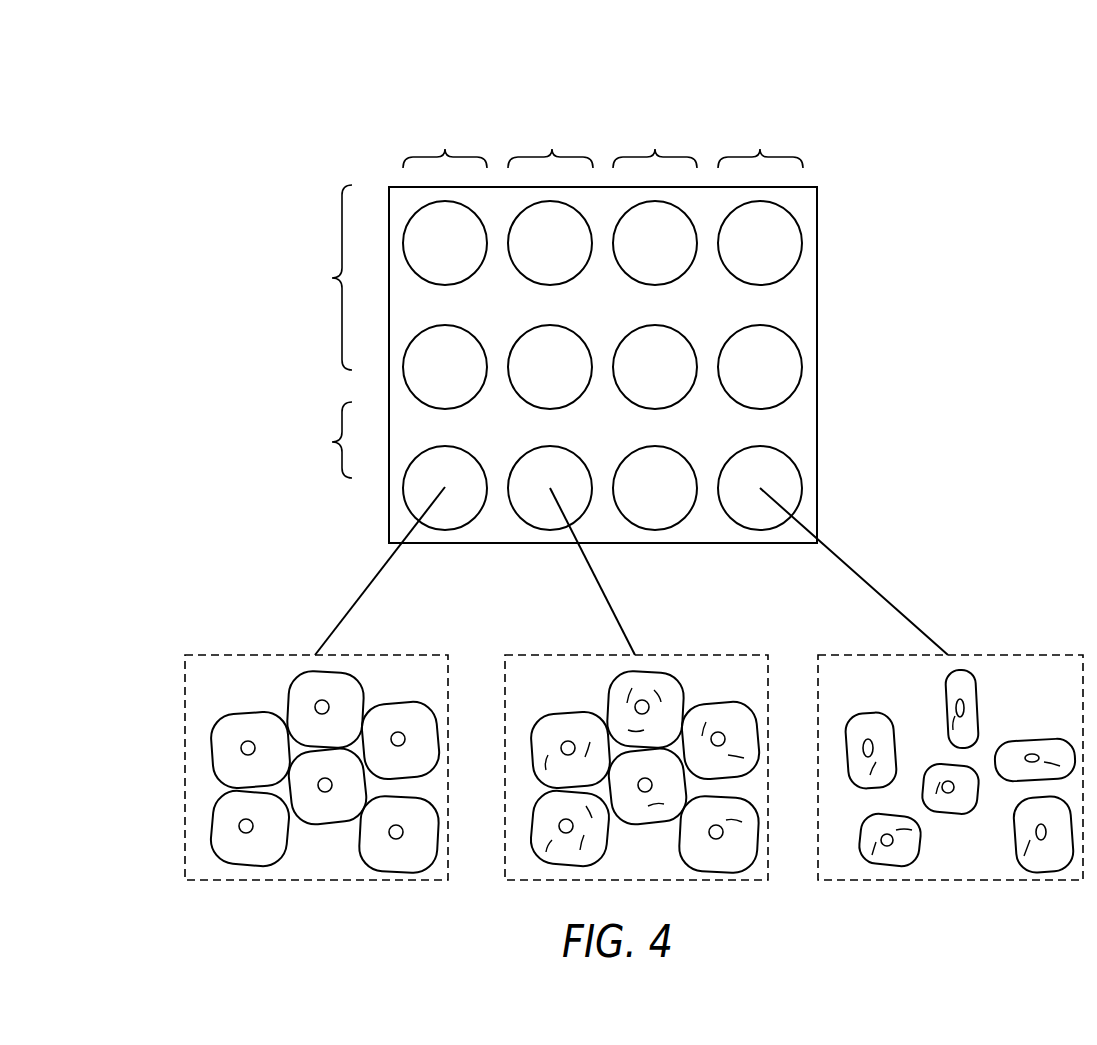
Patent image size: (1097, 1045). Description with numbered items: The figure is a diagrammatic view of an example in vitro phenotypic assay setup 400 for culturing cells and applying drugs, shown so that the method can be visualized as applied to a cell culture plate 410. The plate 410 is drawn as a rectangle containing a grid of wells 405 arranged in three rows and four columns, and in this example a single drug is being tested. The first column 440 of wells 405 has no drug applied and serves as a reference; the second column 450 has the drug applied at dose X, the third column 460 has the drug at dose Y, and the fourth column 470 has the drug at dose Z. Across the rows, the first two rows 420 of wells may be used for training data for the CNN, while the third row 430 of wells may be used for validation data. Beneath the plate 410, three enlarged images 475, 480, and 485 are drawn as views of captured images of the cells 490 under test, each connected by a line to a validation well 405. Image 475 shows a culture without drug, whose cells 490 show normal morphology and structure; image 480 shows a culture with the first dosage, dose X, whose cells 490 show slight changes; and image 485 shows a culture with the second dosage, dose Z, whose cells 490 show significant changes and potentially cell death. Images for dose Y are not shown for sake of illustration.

The in vitro phenotypic assay setup 400 is at (238, 98).
The well 405 is at (803, 365).
The cell culture plate 410 is at (818, 290).
The first two rows of wells 420 is at (257, 268).
The third row of wells 430 is at (257, 431).
The first column of wells 440 is at (444, 84).
The second column of wells 450 is at (533, 115).
The third column of wells 460 is at (641, 115).
The fourth column of wells 470 is at (746, 115).
The image 475 is at (257, 655).
The image 480 is at (580, 655).
The image 485 is at (890, 655).
The cells 490 is at (232, 720).